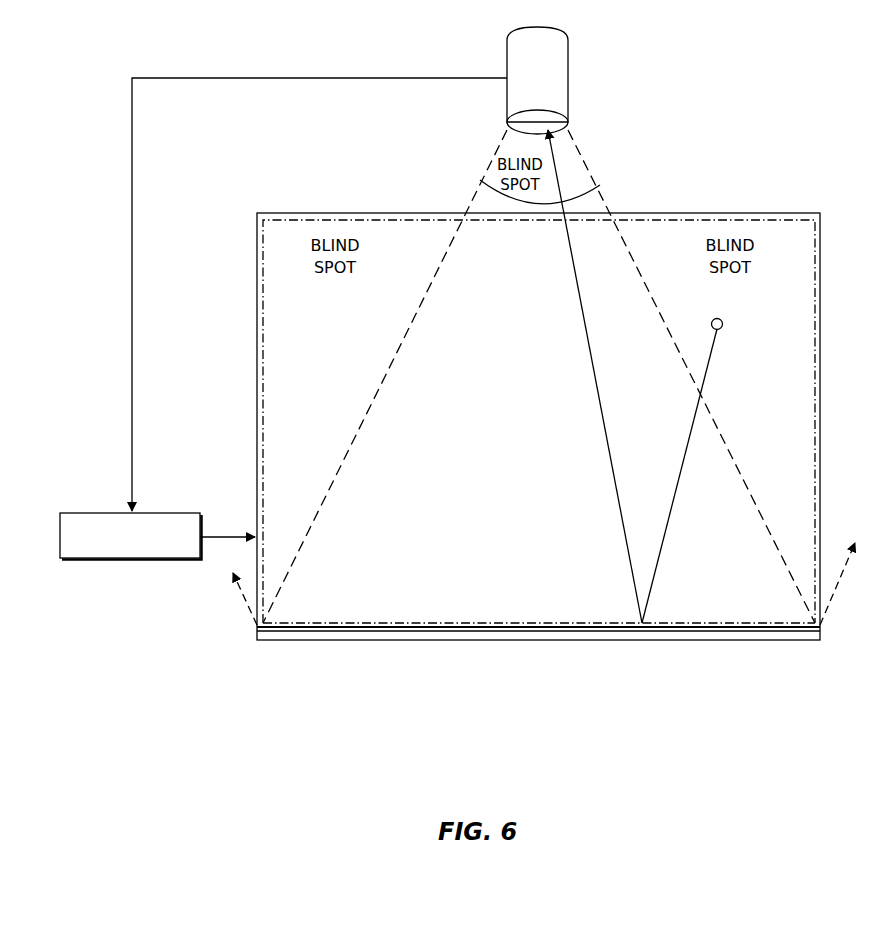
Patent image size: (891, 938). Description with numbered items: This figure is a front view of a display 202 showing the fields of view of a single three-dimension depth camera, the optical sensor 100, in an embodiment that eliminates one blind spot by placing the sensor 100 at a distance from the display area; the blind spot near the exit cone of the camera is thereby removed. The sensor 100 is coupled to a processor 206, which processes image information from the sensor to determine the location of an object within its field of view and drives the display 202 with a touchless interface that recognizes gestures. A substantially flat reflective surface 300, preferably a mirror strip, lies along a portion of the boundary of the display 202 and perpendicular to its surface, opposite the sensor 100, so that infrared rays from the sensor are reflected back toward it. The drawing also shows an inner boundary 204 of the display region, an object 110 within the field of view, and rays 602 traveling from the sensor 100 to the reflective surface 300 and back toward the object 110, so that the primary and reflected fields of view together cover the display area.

The optical sensor 100 is at (568, 88).
The target object 110 is at (721, 319).
The display 202 is at (257, 255).
The inner boundary 204 is at (263, 311).
The processor 206 is at (147, 513).
The reflective surface 300 is at (626, 634).
The light beam 602 is at (613, 497).